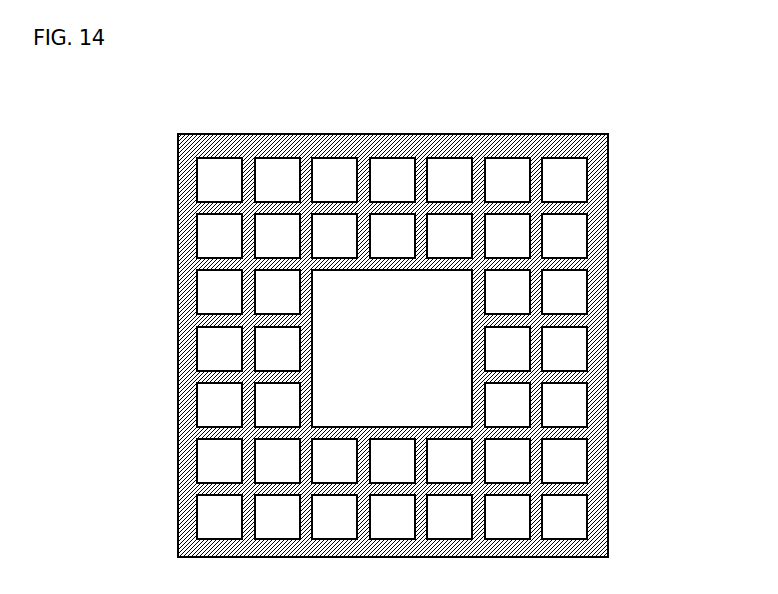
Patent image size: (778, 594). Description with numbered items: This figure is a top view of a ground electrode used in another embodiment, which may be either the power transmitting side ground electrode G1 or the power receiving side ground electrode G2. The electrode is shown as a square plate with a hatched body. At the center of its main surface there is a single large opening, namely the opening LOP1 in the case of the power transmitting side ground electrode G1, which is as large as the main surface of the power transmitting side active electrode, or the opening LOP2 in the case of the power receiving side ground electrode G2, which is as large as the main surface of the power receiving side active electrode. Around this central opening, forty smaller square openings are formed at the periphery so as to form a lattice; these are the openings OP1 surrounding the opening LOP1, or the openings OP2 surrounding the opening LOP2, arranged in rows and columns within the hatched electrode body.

The opening OP1 is at (392, 298).
The opening OP2 is at (212, 296).
The opening LOP1 is at (178, 453).
The opening LOP2 is at (335, 404).
The power transmitting side ground electrode G1 is at (612, 472).
The power receiving side ground electrode G2 is at (456, 345).